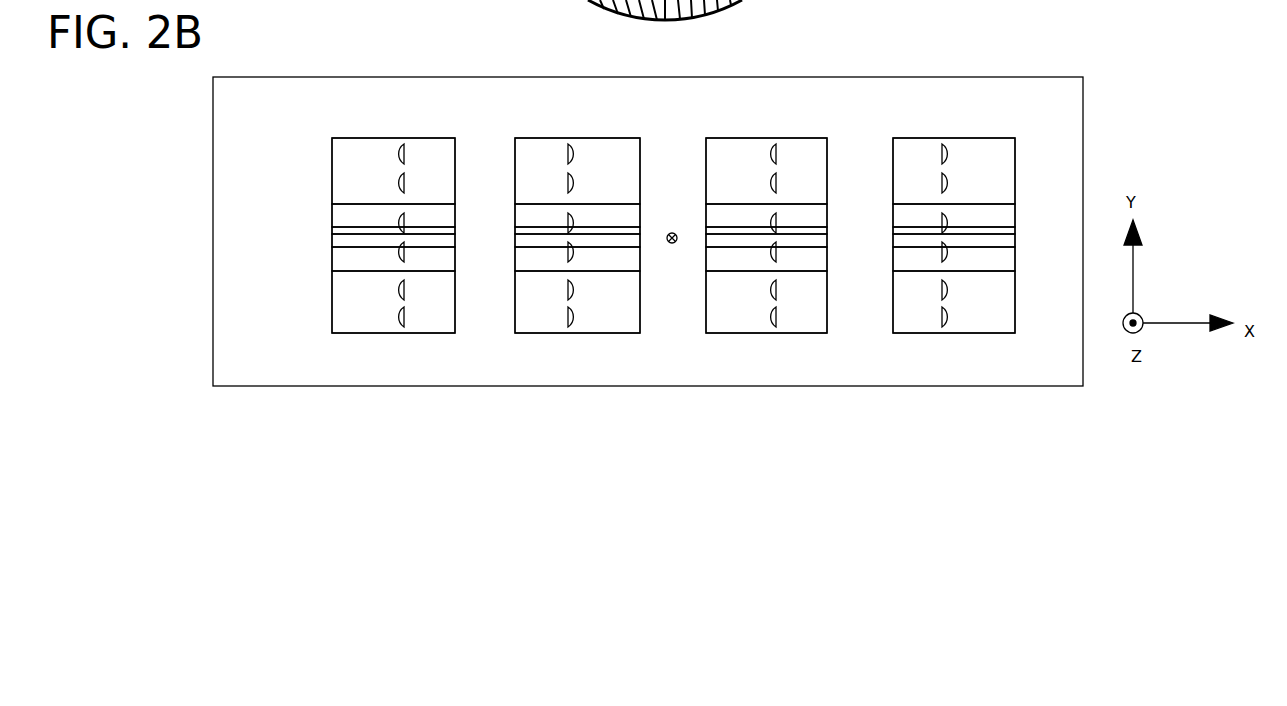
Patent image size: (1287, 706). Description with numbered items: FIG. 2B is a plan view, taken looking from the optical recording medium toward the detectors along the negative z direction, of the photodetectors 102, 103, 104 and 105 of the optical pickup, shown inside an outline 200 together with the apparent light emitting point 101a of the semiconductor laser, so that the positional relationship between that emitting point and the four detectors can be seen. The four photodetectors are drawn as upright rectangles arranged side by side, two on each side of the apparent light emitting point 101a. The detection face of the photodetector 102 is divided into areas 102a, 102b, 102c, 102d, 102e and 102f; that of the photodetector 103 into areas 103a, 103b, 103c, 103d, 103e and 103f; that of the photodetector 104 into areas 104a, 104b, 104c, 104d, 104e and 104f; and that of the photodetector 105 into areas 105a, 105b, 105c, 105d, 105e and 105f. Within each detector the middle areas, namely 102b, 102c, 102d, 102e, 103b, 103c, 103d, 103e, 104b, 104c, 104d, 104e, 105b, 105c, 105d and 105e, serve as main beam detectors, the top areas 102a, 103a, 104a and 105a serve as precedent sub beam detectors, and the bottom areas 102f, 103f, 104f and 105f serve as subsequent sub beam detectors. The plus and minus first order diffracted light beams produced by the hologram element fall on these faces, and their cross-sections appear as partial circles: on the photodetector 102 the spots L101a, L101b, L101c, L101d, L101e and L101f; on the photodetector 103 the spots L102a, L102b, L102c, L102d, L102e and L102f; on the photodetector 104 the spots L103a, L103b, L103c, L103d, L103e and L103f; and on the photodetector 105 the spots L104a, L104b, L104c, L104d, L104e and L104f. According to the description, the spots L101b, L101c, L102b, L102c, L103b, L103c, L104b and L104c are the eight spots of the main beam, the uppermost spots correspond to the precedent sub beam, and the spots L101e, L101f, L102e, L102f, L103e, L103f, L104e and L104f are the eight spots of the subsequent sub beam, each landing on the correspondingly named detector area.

The projection optical system housing 200 is at (1055, 111).
The apparent light emitting point 101a is at (675, 245).
The photodetector 102 is at (335, 333).
The photodetector 103 is at (528, 333).
The photodetector 104 is at (712, 333).
The photodetector 105 is at (900, 332).
The area 102a is at (336, 160).
The area 102b is at (342, 212).
The area 102c is at (336, 228).
The area 102d is at (337, 245).
The area 102e is at (340, 260).
The area 102f is at (340, 302).
The area 103a is at (530, 157).
The area 103b is at (528, 215).
The area 103c is at (530, 230).
The area 103d is at (530, 242).
The area 103e is at (532, 257).
The area 103f is at (530, 299).
The area 104a is at (822, 158).
The area 104b is at (815, 210).
The area 104c is at (820, 228).
The area 104d is at (820, 243).
The area 104e is at (820, 255).
The area 104f is at (818, 300).
The area 105a is at (1013, 157).
The area 105b is at (1005, 207).
The area 105c is at (1005, 230).
The area 105d is at (1010, 242).
The area 105e is at (1010, 255).
The area 105f is at (1012, 298).
The partial circle cross-section L101a is at (392, 152).
The partial circle cross-section L101b is at (388, 178).
The partial circle cross-section L101c is at (404, 225).
The partial circle cross-section L101d is at (407, 250).
The partial circle cross-section L101e is at (387, 293).
The partial circle cross-section L101f is at (398, 328).
The partial circle cross-section L102a is at (570, 143).
The partial circle cross-section L102b is at (567, 177).
The partial circle cross-section L102c is at (586, 223).
The partial circle cross-section L102d is at (588, 252).
The partial circle cross-section L102e is at (566, 297).
The partial circle cross-section L102f is at (577, 328).
The partial circle cross-section L103a is at (767, 153).
The partial circle cross-section L103b is at (760, 178).
The partial circle cross-section L103c is at (778, 222).
The partial circle cross-section L103d is at (778, 240).
The partial circle cross-section L103e is at (758, 297).
The partial circle cross-section L103f is at (770, 325).
The partial circle cross-section L104a is at (947, 148).
The partial circle cross-section L104b is at (945, 177).
The partial circle cross-section L104c is at (957, 218).
The partial circle cross-section L104d is at (962, 250).
The partial circle cross-section L104e is at (938, 297).
The partial circle cross-section L104f is at (953, 325).